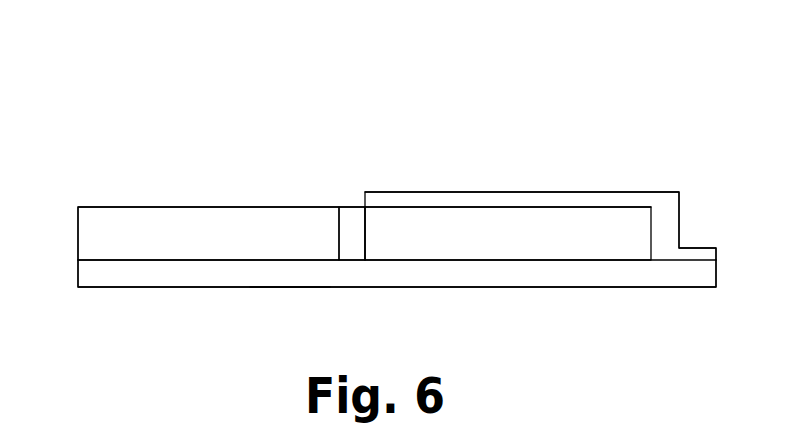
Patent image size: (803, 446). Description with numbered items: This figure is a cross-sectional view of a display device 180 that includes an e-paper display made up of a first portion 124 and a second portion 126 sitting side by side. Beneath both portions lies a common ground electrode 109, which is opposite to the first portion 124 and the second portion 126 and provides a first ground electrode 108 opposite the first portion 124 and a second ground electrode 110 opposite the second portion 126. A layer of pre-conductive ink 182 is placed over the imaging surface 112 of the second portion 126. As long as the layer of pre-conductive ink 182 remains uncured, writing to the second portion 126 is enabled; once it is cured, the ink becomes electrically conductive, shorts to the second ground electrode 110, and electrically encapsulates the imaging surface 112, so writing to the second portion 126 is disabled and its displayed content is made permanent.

The display device 180 is at (572, 106).
The first ground electrode 108 is at (213, 272).
The common ground electrode 109 is at (290, 285).
The second ground electrode 110 is at (563, 272).
The first portion 124 is at (175, 225).
The imaging surface 112 is at (408, 207).
The second portion 126 is at (506, 238).
The layer of pre-conductive ink 182 is at (628, 202).